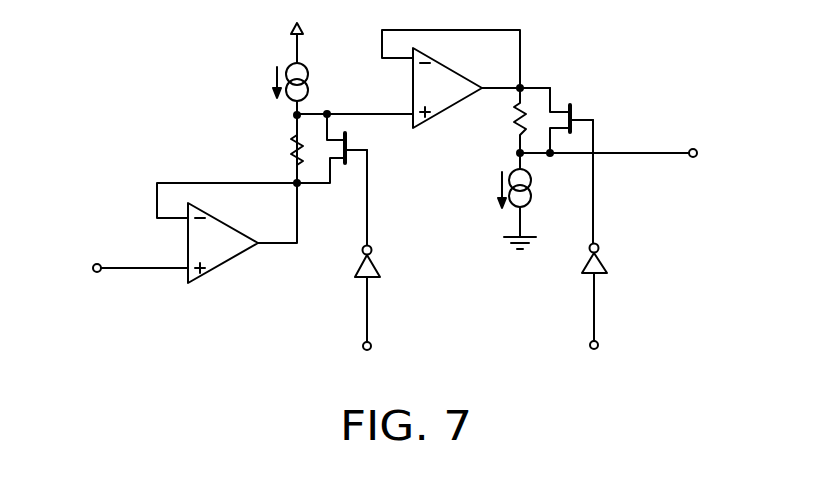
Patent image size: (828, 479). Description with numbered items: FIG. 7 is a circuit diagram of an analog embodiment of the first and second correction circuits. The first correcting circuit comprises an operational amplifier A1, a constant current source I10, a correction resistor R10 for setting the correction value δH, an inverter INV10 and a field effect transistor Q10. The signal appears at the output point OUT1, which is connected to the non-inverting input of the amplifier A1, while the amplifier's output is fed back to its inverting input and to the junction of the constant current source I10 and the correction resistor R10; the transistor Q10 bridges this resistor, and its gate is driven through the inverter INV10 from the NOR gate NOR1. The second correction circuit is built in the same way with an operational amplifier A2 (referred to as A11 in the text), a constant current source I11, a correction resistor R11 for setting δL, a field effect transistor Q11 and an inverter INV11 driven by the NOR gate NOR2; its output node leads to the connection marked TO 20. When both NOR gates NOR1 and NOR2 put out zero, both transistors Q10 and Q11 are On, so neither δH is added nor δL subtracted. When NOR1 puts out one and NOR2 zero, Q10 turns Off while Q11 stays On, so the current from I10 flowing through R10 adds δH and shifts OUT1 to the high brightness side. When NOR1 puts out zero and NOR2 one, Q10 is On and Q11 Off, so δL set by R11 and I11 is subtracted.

The constant current source I10 is at (308, 89).
The correction resistor R10 is at (292, 142).
The field effect transistor Q10 is at (343, 136).
The operational amplifier A1 is at (225, 265).
The output point OUT1 is at (124, 281).
The inverter INV10 is at (376, 266).
The NOR gate NOR1 is at (369, 359).
The operational amplifier A2 is at (450, 65).
The correction resistor R11 is at (514, 118).
The field effect transistor Q11 is at (562, 104).
The constant current source I11 is at (532, 200).
The connection to element 20 is at (651, 153).
The inverter INV11 is at (604, 264).
The NOR gate NOR2 is at (597, 358).